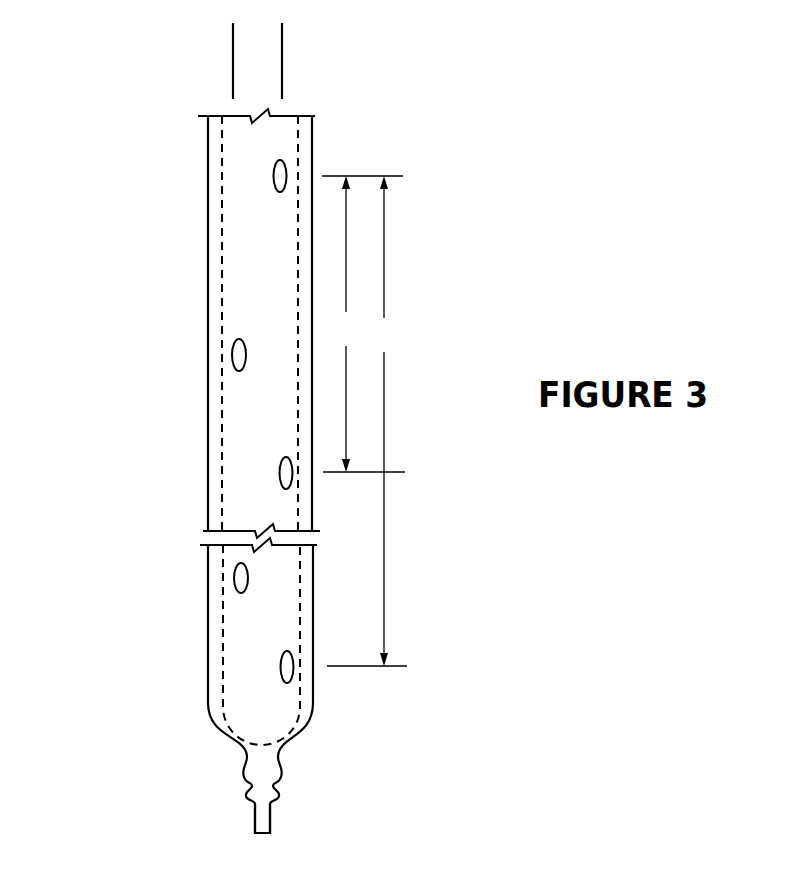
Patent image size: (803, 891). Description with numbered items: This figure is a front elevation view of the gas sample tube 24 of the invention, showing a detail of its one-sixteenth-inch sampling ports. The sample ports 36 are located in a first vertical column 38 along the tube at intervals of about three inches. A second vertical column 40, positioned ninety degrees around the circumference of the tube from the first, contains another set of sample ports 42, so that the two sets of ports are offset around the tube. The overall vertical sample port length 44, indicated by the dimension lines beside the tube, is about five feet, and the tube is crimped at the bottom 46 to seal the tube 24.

The tube 24 is at (208, 711).
The sample ports 36 is at (286, 173).
The first vertical column 38 is at (282, 81).
The second vertical column 40 is at (233, 78).
The sample ports 42 is at (232, 352).
The overall vertical sample port length 44 is at (414, 318).
The bottom 46 is at (272, 822).